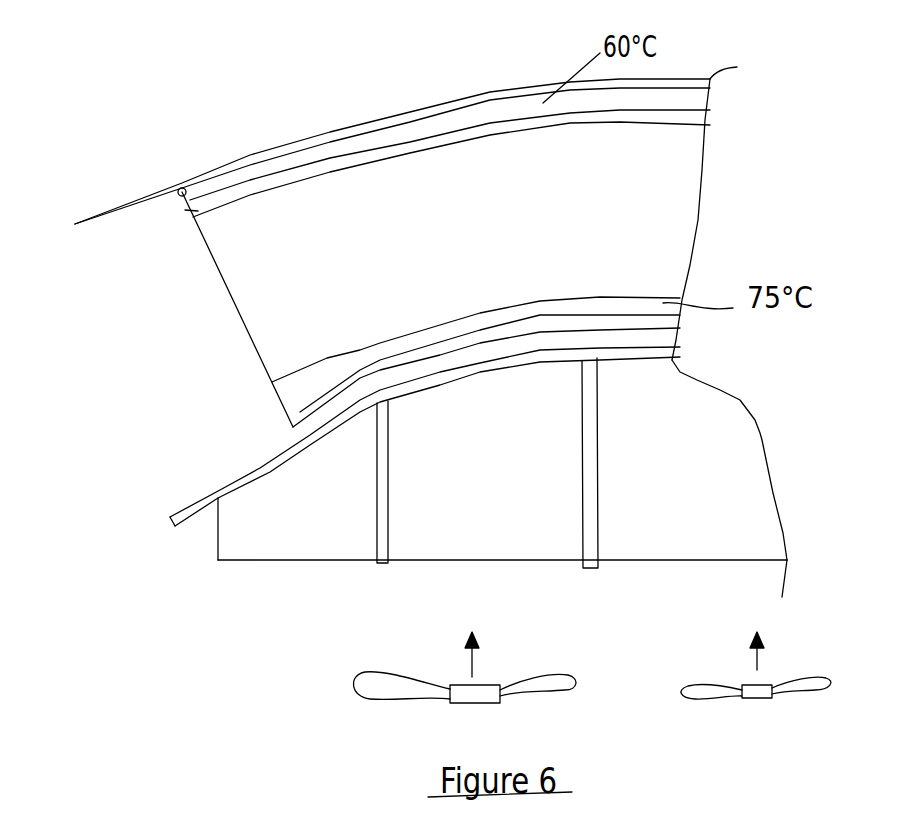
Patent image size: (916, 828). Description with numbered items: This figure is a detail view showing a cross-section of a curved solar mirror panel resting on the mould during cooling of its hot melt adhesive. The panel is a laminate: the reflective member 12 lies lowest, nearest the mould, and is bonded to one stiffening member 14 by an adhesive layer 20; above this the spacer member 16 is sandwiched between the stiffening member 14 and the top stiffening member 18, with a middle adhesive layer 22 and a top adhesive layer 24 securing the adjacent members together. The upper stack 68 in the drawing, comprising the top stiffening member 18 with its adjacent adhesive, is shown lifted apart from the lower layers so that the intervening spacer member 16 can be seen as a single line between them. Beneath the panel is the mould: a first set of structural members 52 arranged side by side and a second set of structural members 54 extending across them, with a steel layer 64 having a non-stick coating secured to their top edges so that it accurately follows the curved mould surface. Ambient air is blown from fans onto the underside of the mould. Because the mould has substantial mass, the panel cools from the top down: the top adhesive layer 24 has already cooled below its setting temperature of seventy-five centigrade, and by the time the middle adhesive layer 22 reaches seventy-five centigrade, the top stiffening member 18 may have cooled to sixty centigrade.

The upper tire layer assembly 68 is at (392, 153).
The stiffening member 18 is at (178, 197).
The adhesive layer 24 is at (185, 212).
The layer 64 is at (660, 353).
The spacer member 16 is at (250, 291).
The adhesive layer 22 is at (285, 382).
The adhesive layer 20 is at (290, 400).
The stiffening member 14 is at (668, 323).
The reflective member 12 is at (290, 427).
The second set of structural members 54 is at (740, 495).
The first set of structural members 52 is at (582, 503).